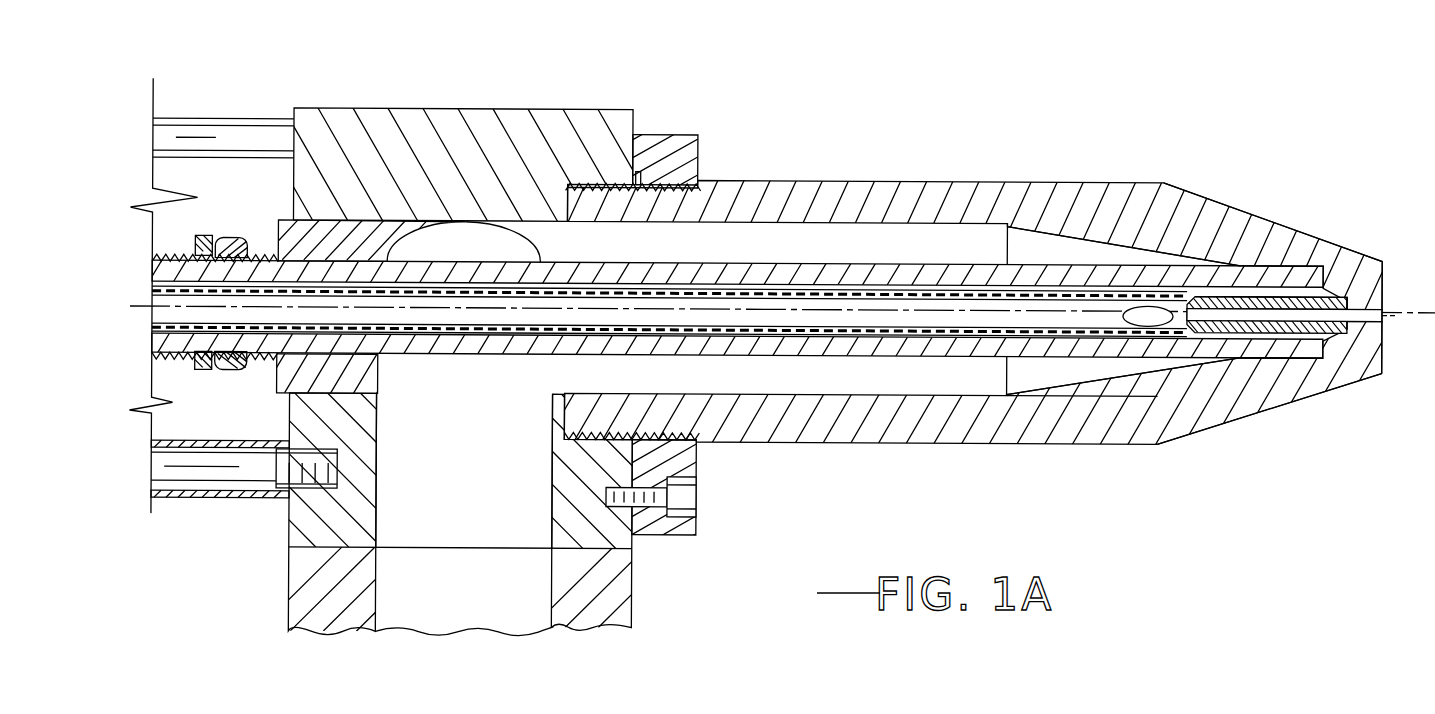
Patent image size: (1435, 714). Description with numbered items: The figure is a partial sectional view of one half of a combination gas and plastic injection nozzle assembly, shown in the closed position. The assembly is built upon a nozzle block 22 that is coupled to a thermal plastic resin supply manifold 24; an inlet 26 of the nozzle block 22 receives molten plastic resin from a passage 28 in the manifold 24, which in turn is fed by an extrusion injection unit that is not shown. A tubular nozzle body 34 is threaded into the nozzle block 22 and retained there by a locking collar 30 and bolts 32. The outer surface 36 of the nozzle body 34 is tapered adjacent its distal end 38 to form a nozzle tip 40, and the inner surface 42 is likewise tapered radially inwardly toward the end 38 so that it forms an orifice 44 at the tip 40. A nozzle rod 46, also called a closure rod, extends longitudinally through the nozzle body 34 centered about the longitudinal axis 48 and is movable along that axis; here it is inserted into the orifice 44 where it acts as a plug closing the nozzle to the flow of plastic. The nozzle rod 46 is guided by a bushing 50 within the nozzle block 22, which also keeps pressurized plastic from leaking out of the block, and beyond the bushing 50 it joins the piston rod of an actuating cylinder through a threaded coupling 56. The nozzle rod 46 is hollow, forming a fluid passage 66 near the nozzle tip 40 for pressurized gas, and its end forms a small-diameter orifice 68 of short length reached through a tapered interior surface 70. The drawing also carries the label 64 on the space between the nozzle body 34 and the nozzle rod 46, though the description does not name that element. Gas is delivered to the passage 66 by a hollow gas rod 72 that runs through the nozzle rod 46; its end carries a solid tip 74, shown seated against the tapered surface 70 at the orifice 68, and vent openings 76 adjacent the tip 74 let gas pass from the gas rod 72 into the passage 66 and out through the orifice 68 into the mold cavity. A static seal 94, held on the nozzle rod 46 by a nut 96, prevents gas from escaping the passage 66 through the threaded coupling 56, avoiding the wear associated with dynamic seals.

The nozzle block 22 is at (442, 110).
The thermal plastic resin supply manifold 24 is at (638, 585).
The inlet 26 is at (487, 495).
The passage 28 is at (508, 613).
The locking collar 30 is at (680, 537).
The bolts 32 is at (697, 500).
The tubular nozzle body 34 is at (783, 181).
The surface 36 is at (1228, 195).
The distal end 38 is at (1388, 260).
The nozzle tip 40 is at (1378, 190).
The inner surface 42 is at (1043, 385).
The orifice 44 is at (1353, 340).
The nozzle rod 46 is at (840, 355).
The longitudinal axis 48 is at (1398, 310).
The bushing 50 is at (352, 222).
The threaded coupling 56 is at (168, 366).
The annular chamber 64 is at (987, 240).
The fluid passage 66 is at (1257, 334).
The orifice 68 is at (1384, 302).
The tapered interior surface 70 is at (1350, 290).
The hollow gas rod 72 is at (732, 334).
The solid tip 74 is at (1266, 295).
The vent openings 76 is at (1125, 309).
The static seal 94 is at (203, 370).
The nut 96 is at (240, 238).